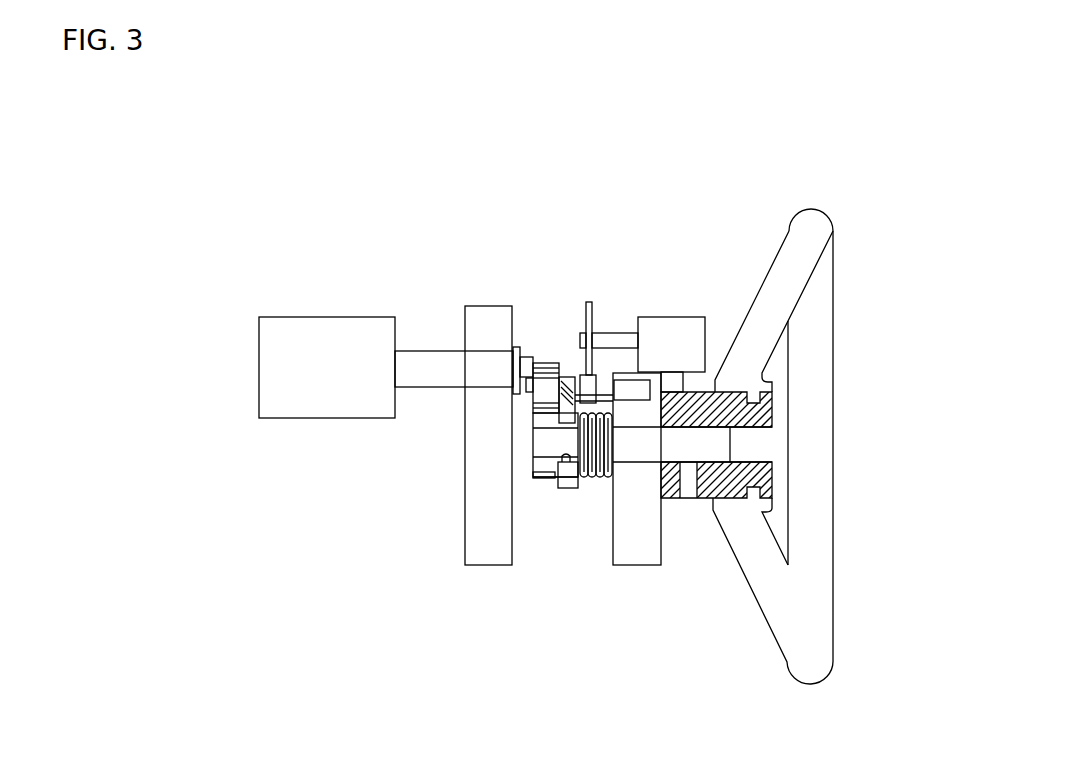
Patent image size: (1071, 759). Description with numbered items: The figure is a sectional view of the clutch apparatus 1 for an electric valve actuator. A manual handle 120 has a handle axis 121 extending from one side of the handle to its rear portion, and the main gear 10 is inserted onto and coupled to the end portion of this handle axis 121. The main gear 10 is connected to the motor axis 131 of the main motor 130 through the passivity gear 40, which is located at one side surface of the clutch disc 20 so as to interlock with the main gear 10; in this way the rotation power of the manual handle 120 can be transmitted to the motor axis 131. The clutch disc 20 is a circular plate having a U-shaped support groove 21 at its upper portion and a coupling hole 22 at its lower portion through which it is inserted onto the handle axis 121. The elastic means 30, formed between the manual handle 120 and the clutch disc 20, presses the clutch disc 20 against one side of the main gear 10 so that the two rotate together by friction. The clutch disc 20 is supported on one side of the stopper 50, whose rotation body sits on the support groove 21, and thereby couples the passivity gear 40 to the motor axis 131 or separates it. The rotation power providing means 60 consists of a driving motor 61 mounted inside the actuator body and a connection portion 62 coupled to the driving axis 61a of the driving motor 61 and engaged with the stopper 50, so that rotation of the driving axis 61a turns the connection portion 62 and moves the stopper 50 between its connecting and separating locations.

The clutch apparatus 1 is at (684, 200).
The main gear 10 is at (547, 463).
The clutch disc 20 is at (570, 487).
The support groove 21 is at (575, 376).
The coupling hole 22 is at (562, 473).
The elastic means 30 is at (587, 473).
The passivity gear 40 is at (520, 406).
The stopper 50 is at (561, 375).
The rotation power providing means 60 is at (670, 256).
The driving motor 61 is at (667, 330).
The driving axis 61a is at (620, 340).
The connection portion 62 is at (592, 322).
The manual handle 120 is at (763, 583).
The handle axis 121 is at (690, 448).
The main motor 130 is at (320, 418).
The motor axis 131 is at (432, 372).